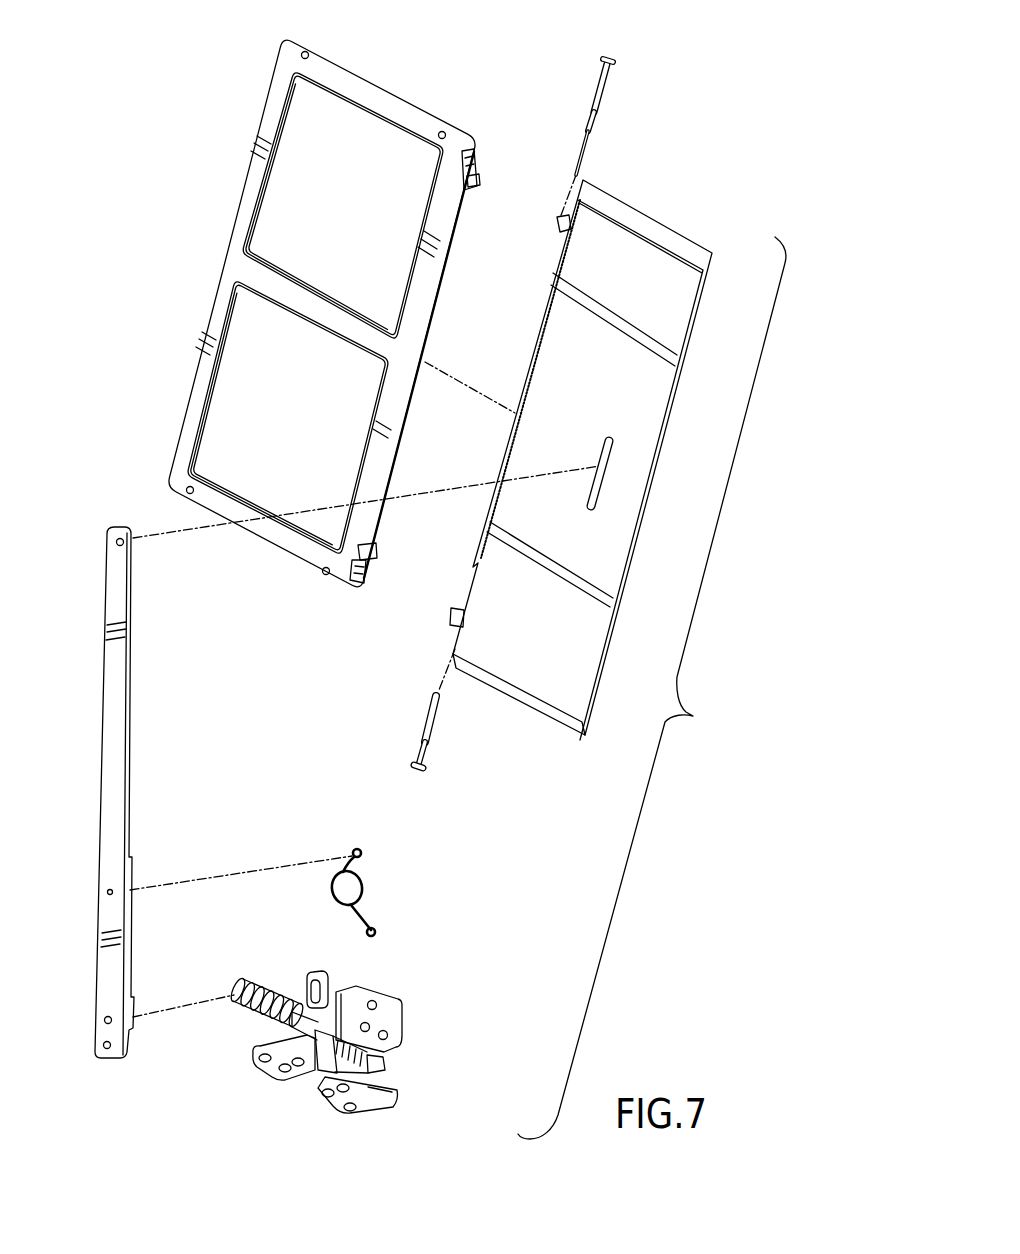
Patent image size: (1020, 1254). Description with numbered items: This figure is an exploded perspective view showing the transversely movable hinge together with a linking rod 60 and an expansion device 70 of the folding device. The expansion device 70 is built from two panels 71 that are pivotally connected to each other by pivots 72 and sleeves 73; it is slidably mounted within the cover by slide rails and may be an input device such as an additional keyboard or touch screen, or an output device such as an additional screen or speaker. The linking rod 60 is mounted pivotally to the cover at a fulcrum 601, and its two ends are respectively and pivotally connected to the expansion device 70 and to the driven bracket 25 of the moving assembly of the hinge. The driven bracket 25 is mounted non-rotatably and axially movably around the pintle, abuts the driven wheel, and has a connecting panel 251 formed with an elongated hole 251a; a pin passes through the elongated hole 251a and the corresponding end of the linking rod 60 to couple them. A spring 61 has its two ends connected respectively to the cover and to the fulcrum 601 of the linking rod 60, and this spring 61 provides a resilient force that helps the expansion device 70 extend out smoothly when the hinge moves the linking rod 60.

The expansion device 70 is at (660, 190).
The panel 71 is at (375, 93).
The pivot 72 is at (612, 57).
The sleeve 73 is at (475, 177).
The linking rod 60 is at (107, 698).
The fulcrum 601 is at (113, 890).
The spring 61 is at (365, 883).
The driven bracket 25 is at (288, 1031).
The connecting panel 251 is at (328, 990).
The elongated hole 251a is at (309, 974).